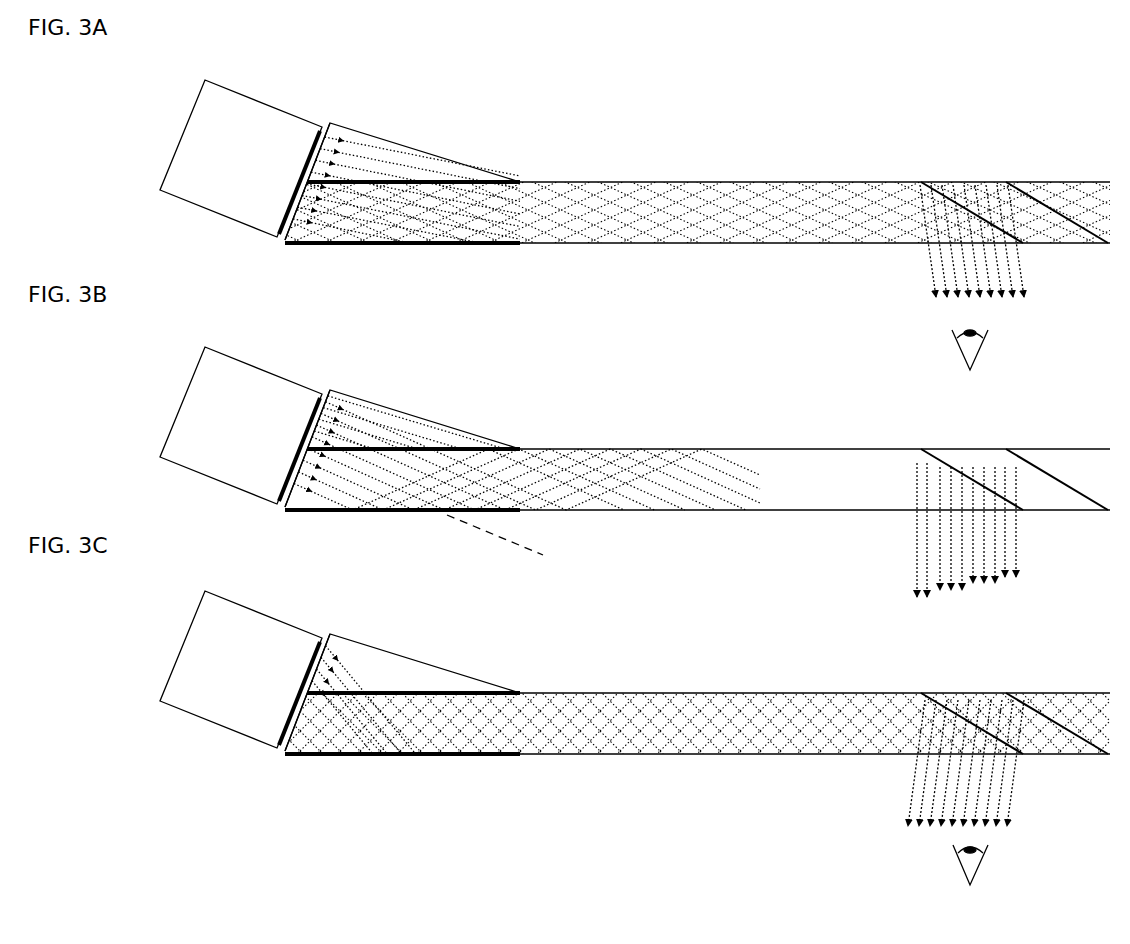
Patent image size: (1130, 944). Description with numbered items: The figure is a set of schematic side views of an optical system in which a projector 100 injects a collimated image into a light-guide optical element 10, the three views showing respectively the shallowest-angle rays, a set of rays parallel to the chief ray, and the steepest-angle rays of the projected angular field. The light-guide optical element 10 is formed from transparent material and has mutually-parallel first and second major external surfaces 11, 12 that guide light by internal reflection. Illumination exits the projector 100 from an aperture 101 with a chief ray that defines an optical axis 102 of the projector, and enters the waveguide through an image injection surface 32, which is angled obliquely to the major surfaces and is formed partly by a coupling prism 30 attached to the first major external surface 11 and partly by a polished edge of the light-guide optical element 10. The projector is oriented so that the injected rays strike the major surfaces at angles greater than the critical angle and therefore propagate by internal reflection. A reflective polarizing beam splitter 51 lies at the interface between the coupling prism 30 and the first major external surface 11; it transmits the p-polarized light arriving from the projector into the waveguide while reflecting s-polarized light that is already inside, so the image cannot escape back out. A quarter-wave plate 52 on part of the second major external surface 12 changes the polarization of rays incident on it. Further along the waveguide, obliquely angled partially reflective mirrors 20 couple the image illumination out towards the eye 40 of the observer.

In FIG. 3A, the light-guide optical element 10 is at (697, 213).
In FIG. 3B, the light-guide optical element 10 is at (697, 483).
In FIG. 3C, the light-guide optical element 10 is at (697, 724).
In FIG. 3A, the first major external surface 11 is at (595, 181).
In FIG. 3B, the first major external surface 11 is at (708, 429).
In FIG. 3C, the first major external surface 11 is at (708, 673).
In FIG. 3A, the second major external surface 12 is at (592, 243).
In FIG. 3B, the second major external surface 12 is at (697, 534).
In FIG. 3C, the second major external surface 12 is at (697, 775).
In FIG. 3A, the partially reflective mirrors 20 is at (1037, 197).
In FIG. 3B, the partially reflective mirrors 20 is at (1014, 463).
In FIG. 3C, the partially reflective mirrors 20 is at (1014, 707).
In FIG. 3A, the coupling prism 30 is at (393, 142).
In FIG. 3B, the coupling prism 30 is at (522, 439).
In FIG. 3C, the coupling prism 30 is at (402, 683).
In FIG. 3A, the image injection surface 32 is at (330, 125).
In FIG. 3B, the image injection surface 32 is at (340, 428).
In FIG. 3C, the image injection surface 32 is at (340, 672).
In FIG. 3A, the eye 40 is at (958, 348).
In FIG. 3C, the eye 40 is at (958, 806).
In FIG. 3A, the reflective polarizing beam splitter 51 is at (500, 181).
In FIG. 3B, the reflective polarizing beam splitter 51 is at (435, 429).
In FIG. 3C, the reflective polarizing beam splitter 51 is at (435, 673).
In FIG. 3A, the quarter-wave plate 52 is at (477, 243).
In FIG. 3B, the quarter-wave plate 52 is at (402, 531).
In FIG. 3C, the quarter-wave plate 52 is at (402, 773).
In FIG. 3A, the projector 100 is at (190, 108).
In FIG. 3B, the projector 100 is at (217, 418).
In FIG. 3C, the projector 100 is at (217, 662).
In FIG. 3A, the aperture 101 is at (282, 222).
In FIG. 3B, the aperture 101 is at (271, 470).
In FIG. 3C, the aperture 101 is at (271, 714).
In FIG. 3B, the optical axis 102 is at (476, 550).